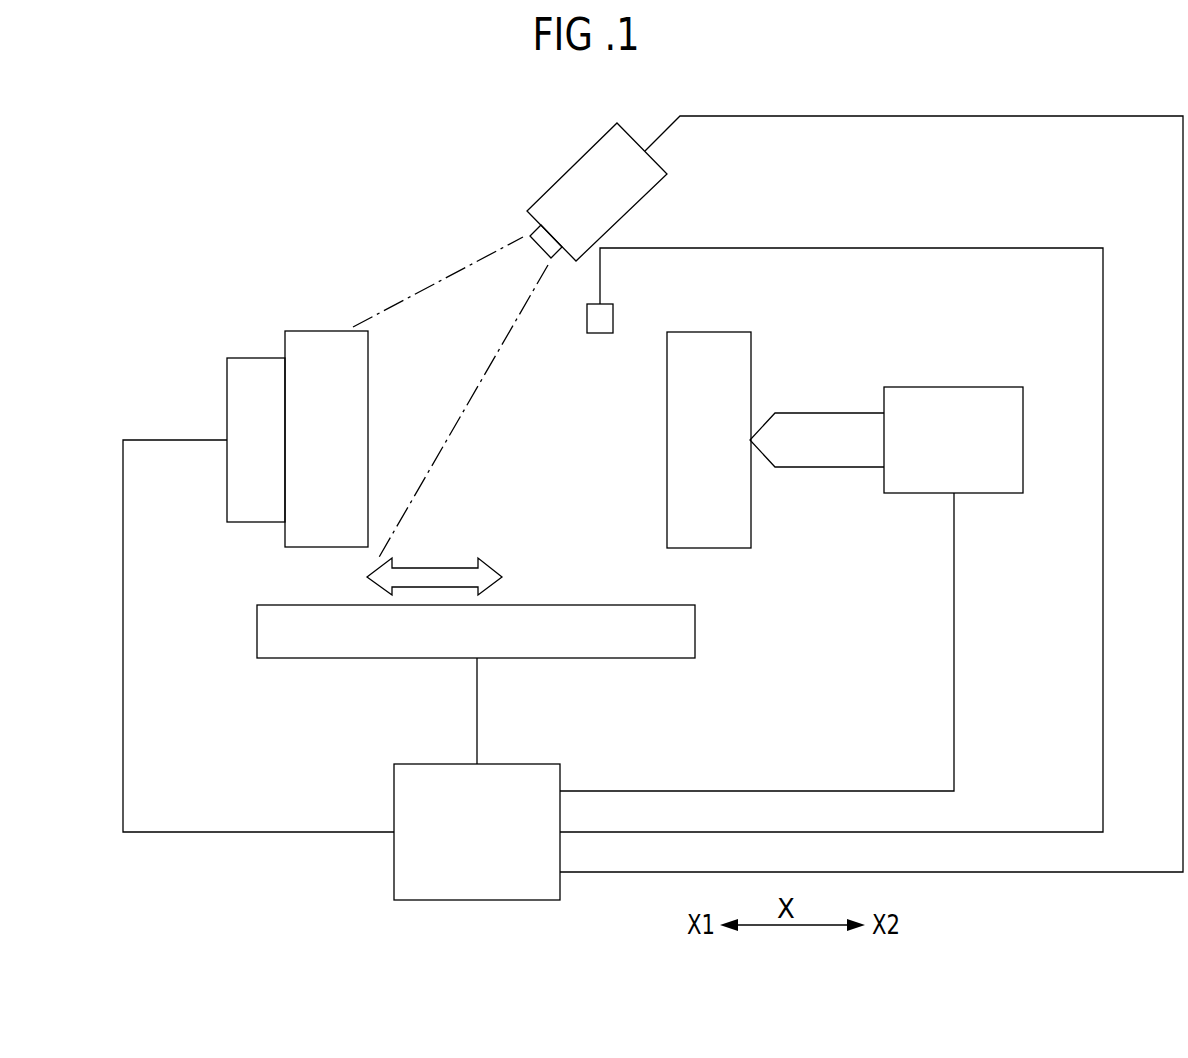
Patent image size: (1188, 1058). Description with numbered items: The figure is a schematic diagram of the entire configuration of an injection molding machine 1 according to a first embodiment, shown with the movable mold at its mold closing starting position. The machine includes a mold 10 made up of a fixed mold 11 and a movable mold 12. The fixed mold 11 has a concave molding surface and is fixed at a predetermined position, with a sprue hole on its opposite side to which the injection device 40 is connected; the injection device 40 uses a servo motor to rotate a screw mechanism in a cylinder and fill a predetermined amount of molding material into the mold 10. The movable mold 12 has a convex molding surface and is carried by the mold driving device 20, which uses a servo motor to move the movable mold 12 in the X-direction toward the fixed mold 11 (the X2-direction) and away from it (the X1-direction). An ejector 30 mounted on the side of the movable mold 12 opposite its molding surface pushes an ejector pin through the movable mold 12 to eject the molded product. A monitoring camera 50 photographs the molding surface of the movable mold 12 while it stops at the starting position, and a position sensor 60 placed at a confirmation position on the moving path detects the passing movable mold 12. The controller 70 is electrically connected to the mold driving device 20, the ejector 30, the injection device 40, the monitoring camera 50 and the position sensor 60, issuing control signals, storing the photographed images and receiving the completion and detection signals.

The injection molding machine 1 is at (238, 196).
The mold 10 is at (418, 275).
The fixed mold 11 is at (727, 332).
The movable mold 12 is at (330, 331).
The mold driving device 20 is at (358, 658).
The ejector 30 is at (252, 358).
The injection device 40 is at (957, 387).
The monitoring camera 50 is at (568, 168).
The position sensor 60 is at (606, 302).
The controller 70 is at (535, 764).